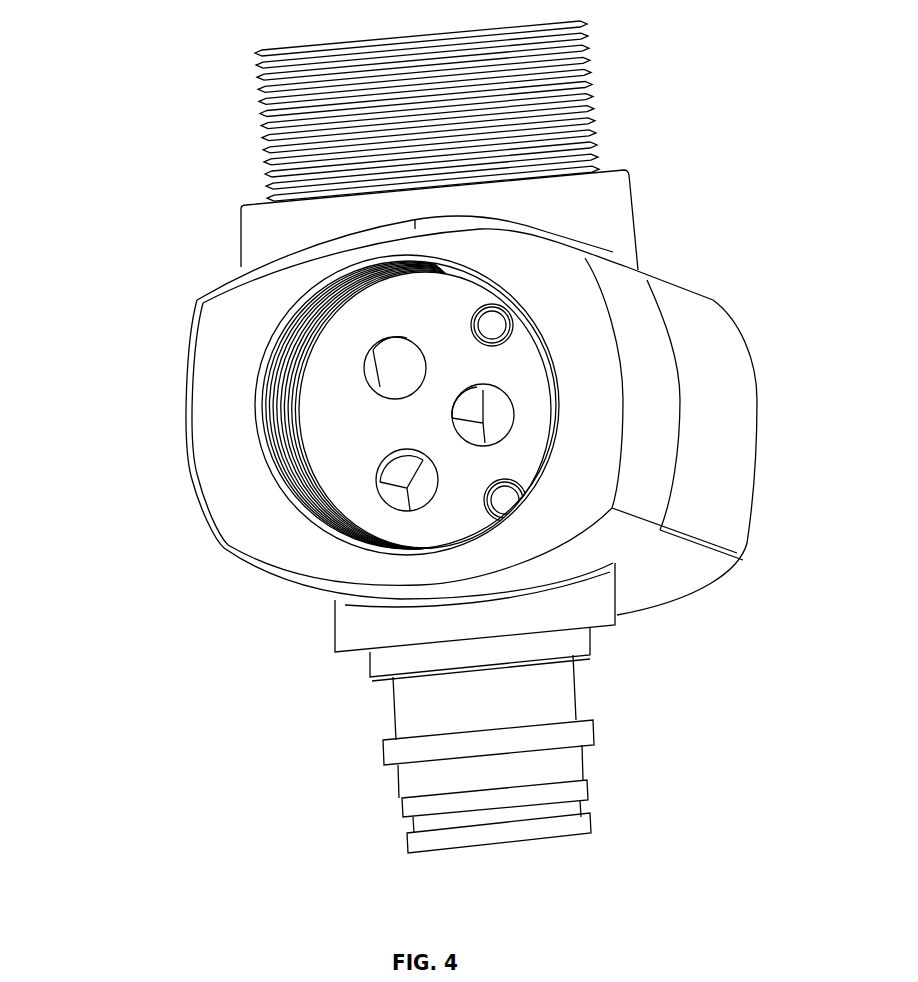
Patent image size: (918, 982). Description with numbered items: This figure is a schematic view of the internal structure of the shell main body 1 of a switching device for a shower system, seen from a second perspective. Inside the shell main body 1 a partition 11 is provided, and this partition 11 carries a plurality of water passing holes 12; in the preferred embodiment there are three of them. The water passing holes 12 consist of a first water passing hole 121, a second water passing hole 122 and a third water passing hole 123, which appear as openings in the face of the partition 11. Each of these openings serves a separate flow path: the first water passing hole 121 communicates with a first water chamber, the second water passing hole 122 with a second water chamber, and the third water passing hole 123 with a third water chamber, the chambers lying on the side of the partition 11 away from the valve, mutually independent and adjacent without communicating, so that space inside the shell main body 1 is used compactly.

The shell main body 1 is at (733, 622).
The partition 11 is at (518, 368).
The water passing holes 12 is at (73, 268).
The first water passing hole 121 is at (372, 352).
The second water passing hole 122 is at (447, 422).
The third water passing hole 123 is at (393, 497).